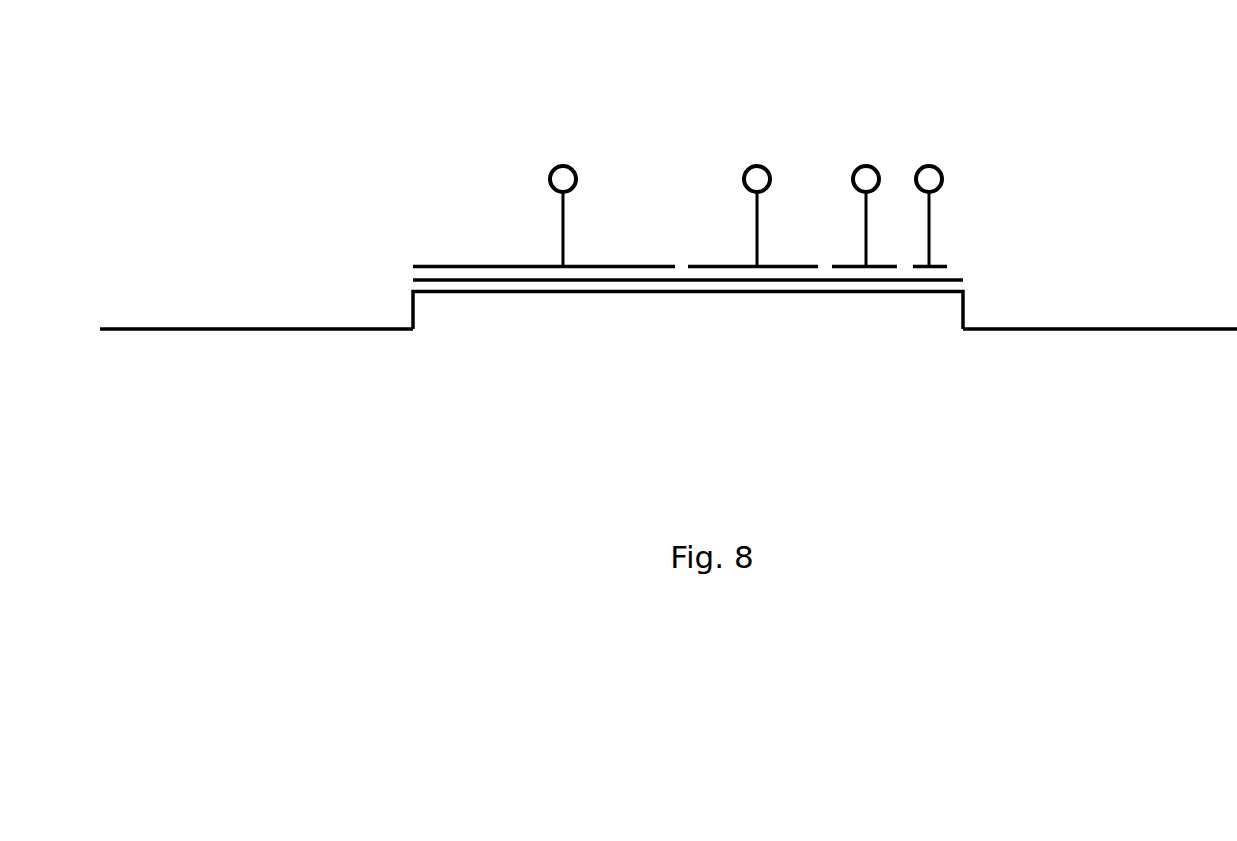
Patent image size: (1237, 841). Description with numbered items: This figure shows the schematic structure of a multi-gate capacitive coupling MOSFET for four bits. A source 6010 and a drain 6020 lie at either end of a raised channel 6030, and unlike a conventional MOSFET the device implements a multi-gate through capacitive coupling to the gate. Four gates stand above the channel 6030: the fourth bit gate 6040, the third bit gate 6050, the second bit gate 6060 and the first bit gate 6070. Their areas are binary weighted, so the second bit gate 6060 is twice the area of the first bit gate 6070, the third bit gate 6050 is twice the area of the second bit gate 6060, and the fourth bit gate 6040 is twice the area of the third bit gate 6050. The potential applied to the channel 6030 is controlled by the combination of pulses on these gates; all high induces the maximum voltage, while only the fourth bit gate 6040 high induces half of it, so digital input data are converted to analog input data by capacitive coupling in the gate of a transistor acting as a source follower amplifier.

The source 6010 is at (227, 338).
The drain 6020 is at (1167, 338).
The channel 6030 is at (698, 330).
The fourth bit gate 6040 is at (557, 145).
The third bit gate 6050 is at (750, 145).
The second bit gate 6060 is at (863, 145).
The first bit gate 6070 is at (928, 150).